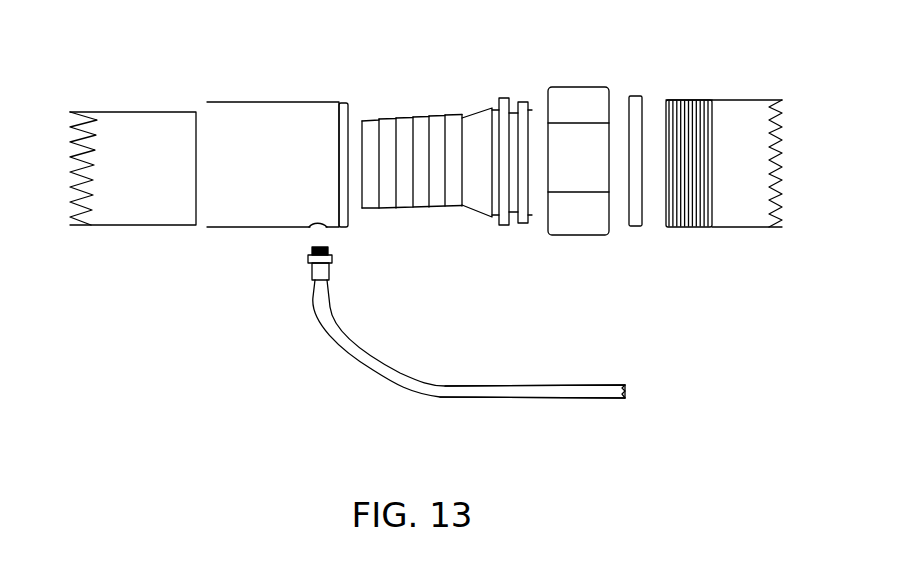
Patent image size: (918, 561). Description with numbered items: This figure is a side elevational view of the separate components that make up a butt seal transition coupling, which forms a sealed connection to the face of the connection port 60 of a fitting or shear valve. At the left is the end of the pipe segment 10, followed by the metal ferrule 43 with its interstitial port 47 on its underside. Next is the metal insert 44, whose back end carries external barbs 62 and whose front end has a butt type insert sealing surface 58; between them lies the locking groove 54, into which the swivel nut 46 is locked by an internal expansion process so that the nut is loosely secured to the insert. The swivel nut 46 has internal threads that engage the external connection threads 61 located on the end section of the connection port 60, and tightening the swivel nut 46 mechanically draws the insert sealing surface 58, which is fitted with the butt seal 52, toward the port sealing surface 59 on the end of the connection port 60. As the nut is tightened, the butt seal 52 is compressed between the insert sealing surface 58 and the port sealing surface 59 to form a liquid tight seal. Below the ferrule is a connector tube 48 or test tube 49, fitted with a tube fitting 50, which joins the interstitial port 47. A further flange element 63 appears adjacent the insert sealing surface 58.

The pipe segment 10 is at (128, 132).
The metal ferrule 43 is at (263, 123).
The metal insert 44 is at (468, 110).
The swivel nut 46 is at (572, 218).
The interstitial port 47 is at (308, 230).
The connector tube 48 is at (388, 372).
The test tube 49 is at (532, 391).
The tube fitting 50 is at (332, 262).
The butt seal 52 is at (643, 228).
The locking groove 54 is at (515, 222).
The insert sealing surface 58 is at (540, 107).
The port sealing surface 59 is at (663, 105).
The connection port 60 is at (755, 197).
The connection threads 61 is at (707, 228).
The external barbs 62 is at (417, 204).
The flange 63 is at (505, 97).